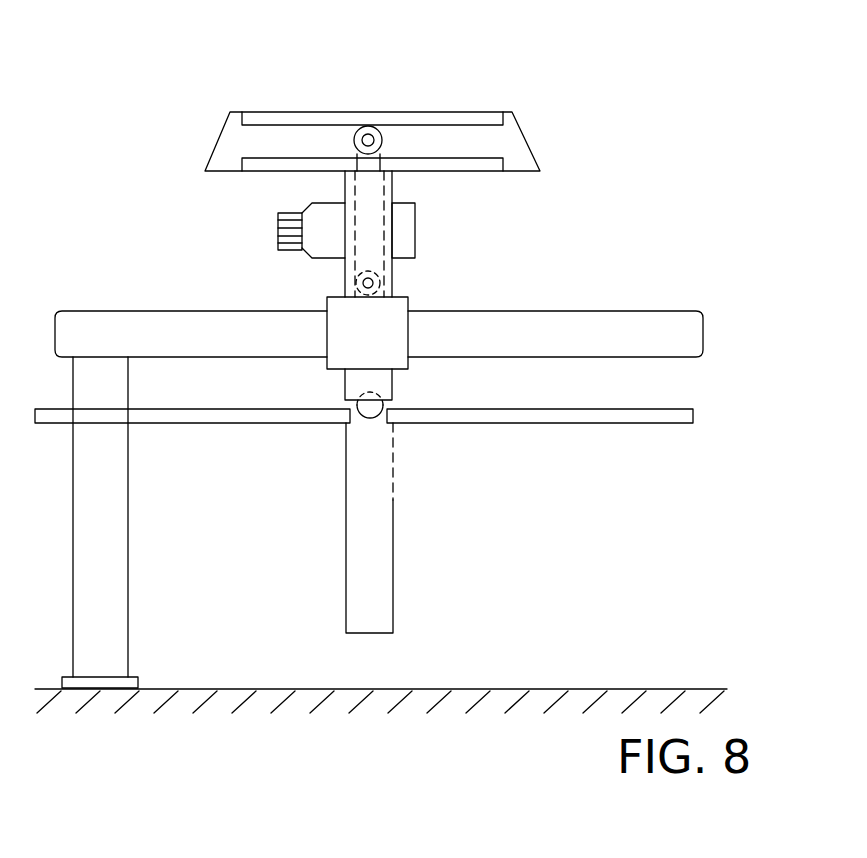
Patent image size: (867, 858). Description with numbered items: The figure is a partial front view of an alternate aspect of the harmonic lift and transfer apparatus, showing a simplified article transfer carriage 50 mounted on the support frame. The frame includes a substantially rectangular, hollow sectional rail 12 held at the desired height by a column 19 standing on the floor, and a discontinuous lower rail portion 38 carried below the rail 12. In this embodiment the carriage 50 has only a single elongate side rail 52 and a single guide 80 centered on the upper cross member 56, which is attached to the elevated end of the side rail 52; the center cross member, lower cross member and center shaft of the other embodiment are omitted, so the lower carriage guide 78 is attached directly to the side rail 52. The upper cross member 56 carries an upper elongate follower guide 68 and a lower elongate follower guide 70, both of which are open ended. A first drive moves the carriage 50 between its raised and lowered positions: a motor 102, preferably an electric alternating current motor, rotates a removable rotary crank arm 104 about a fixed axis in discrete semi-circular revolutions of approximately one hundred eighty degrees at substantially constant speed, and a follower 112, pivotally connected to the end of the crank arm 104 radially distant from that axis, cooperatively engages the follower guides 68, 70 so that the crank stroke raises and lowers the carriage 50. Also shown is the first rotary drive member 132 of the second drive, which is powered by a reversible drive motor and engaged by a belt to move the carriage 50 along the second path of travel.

The sectional rail 12 is at (637, 312).
The column 19 is at (128, 492).
The lower rail portion 38 is at (583, 423).
The article transfer carriage 50 is at (660, 205).
The side rail 52 is at (393, 270).
The upper cross member 56 is at (537, 150).
The upper elongate follower guide 68 is at (258, 117).
The lower elongate follower guide 70 is at (255, 165).
The lower carriage guide 78 is at (365, 412).
The guide 80 is at (347, 357).
The motor 102 is at (307, 212).
The rotary crank arm 104 is at (393, 185).
The follower 112 is at (362, 127).
The first rotary drive member 132 is at (268, 247).